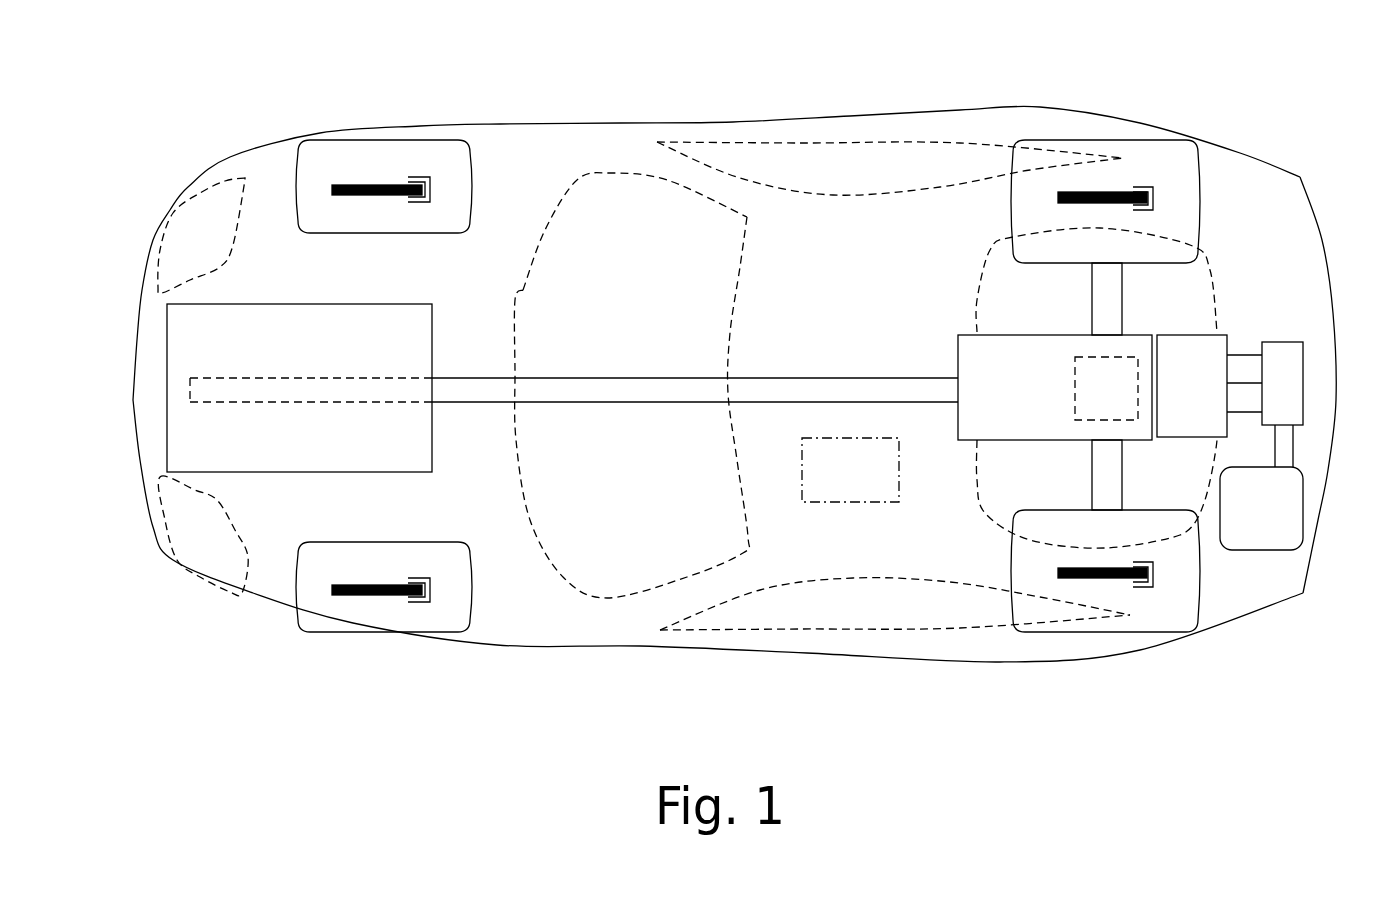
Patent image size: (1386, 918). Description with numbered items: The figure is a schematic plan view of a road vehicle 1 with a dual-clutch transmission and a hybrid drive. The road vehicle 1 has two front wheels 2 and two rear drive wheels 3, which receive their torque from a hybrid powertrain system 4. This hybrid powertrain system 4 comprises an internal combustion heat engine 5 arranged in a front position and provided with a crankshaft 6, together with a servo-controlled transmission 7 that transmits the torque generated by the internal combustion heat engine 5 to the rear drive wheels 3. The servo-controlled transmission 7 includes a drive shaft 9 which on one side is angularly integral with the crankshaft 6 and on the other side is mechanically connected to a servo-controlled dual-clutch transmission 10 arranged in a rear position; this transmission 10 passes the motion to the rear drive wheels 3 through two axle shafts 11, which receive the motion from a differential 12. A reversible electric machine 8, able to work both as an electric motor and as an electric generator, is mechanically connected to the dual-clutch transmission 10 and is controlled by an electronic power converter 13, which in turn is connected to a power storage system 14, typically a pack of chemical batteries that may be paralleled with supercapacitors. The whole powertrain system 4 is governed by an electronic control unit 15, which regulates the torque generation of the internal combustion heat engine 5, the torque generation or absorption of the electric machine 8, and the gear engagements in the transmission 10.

The road vehicle 1 is at (1319, 810).
The front wheels 2 is at (320, 160).
The rear drive wheels 3 is at (1183, 158).
The hybrid powertrain system 4 is at (217, 150).
The internal combustion heat engine 5 is at (177, 330).
The crankshaft 6 is at (287, 385).
The servo-controlled transmission 7 is at (765, 100).
The reversible electric machine 8 is at (1209, 386).
The drive shaft 9 is at (785, 392).
The servo-controlled dual-clutch transmission 10 is at (972, 363).
The axle shafts 11 is at (1103, 290).
The differential 12 is at (1106, 388).
The electronic power converter 13 is at (1282, 404).
The power storage system 14 is at (1261, 508).
The electronic control unit 15 is at (850, 470).